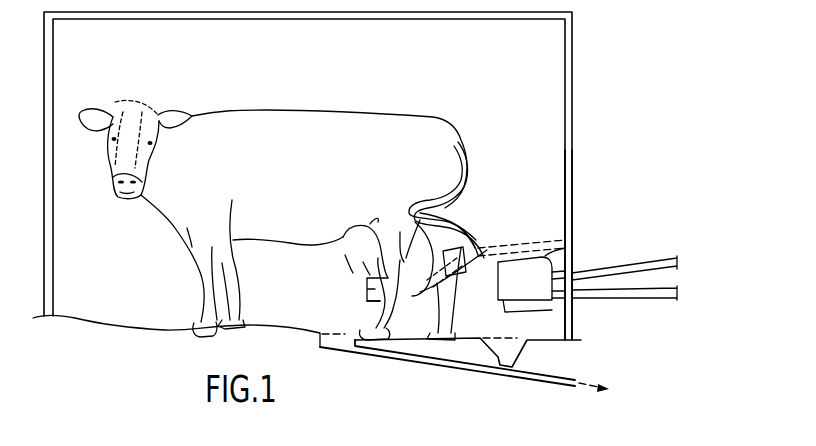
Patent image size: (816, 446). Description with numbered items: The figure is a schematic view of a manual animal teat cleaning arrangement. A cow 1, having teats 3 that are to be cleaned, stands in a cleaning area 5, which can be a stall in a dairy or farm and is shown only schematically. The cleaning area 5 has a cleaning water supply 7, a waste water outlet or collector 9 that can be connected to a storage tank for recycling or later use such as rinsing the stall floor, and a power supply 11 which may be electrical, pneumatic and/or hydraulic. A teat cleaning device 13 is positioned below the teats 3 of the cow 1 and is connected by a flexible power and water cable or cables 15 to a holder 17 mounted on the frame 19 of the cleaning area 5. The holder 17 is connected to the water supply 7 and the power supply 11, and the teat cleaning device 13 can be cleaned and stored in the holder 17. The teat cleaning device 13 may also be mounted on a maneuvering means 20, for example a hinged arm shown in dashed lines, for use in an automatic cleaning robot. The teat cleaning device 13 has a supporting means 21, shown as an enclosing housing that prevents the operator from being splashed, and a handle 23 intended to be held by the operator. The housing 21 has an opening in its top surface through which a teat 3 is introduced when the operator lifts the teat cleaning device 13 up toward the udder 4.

The cow 1 is at (260, 119).
The teats 3 is at (362, 258).
The udder 4 is at (344, 247).
The cleaning area 5 is at (588, 117).
The cleaning water supply 7 is at (637, 301).
The waste water outlet or collector 9 is at (404, 361).
The power supply 11 is at (641, 262).
The teat cleaning device 13 is at (367, 289).
The flexible power and water cable 15 is at (568, 244).
The holder 17 is at (536, 298).
The frame 19 is at (572, 197).
The maneuvering means 20 is at (536, 238).
The supporting means 21 is at (368, 301).
The handle 23 is at (402, 312).